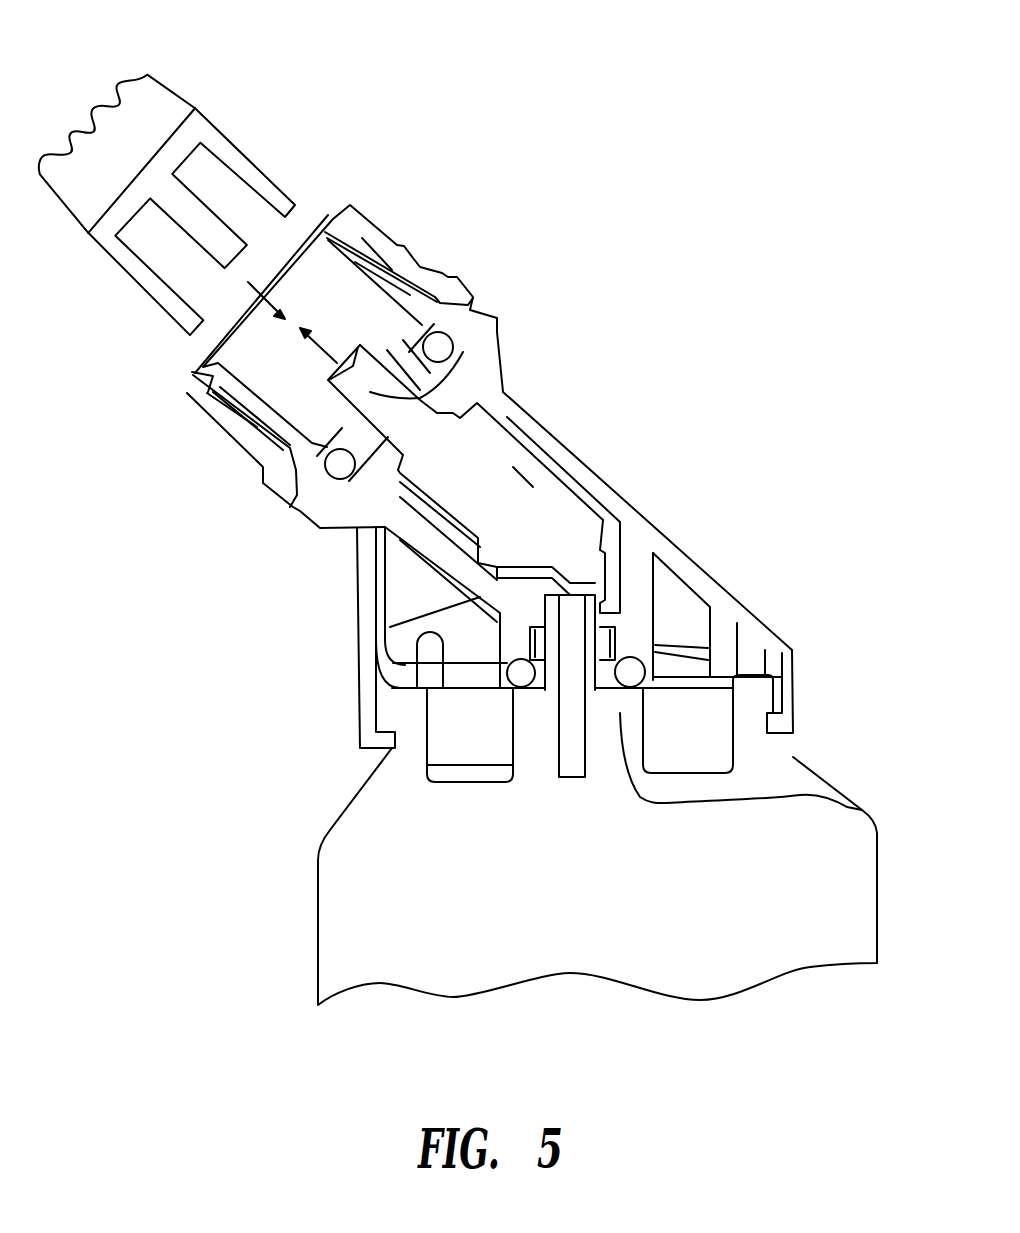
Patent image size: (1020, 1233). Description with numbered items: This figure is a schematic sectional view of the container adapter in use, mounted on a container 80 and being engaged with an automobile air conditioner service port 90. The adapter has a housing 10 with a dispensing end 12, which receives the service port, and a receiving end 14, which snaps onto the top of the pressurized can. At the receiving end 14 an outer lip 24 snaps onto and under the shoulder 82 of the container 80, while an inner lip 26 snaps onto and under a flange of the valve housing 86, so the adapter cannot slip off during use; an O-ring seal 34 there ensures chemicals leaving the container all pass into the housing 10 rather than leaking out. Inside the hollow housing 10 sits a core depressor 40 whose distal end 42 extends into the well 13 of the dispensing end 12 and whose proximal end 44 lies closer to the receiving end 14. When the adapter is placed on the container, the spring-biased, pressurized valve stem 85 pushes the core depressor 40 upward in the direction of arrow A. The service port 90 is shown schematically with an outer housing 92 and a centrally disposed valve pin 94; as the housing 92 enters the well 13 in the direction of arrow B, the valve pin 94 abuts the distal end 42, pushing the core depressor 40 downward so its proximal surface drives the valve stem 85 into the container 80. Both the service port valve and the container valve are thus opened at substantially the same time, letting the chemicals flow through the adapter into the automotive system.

The housing 10 is at (543, 445).
The dispensing end 12 is at (417, 267).
The well 13 is at (293, 381).
The receiving end 14 is at (792, 652).
The outer lip 24 is at (380, 768).
The inner lip 26 is at (647, 687).
The O-ring seal 34 is at (507, 672).
The core depressor 40 is at (510, 508).
The distal end 42 is at (500, 332).
The proximal end 44 is at (588, 567).
The container 80 is at (523, 914).
The shoulder 82 is at (747, 697).
The valve stem 85 is at (572, 770).
The valve housing 86 is at (860, 808).
The service port 90 is at (270, 80).
The outer housing 92 is at (235, 162).
The valve pin 94 is at (218, 237).